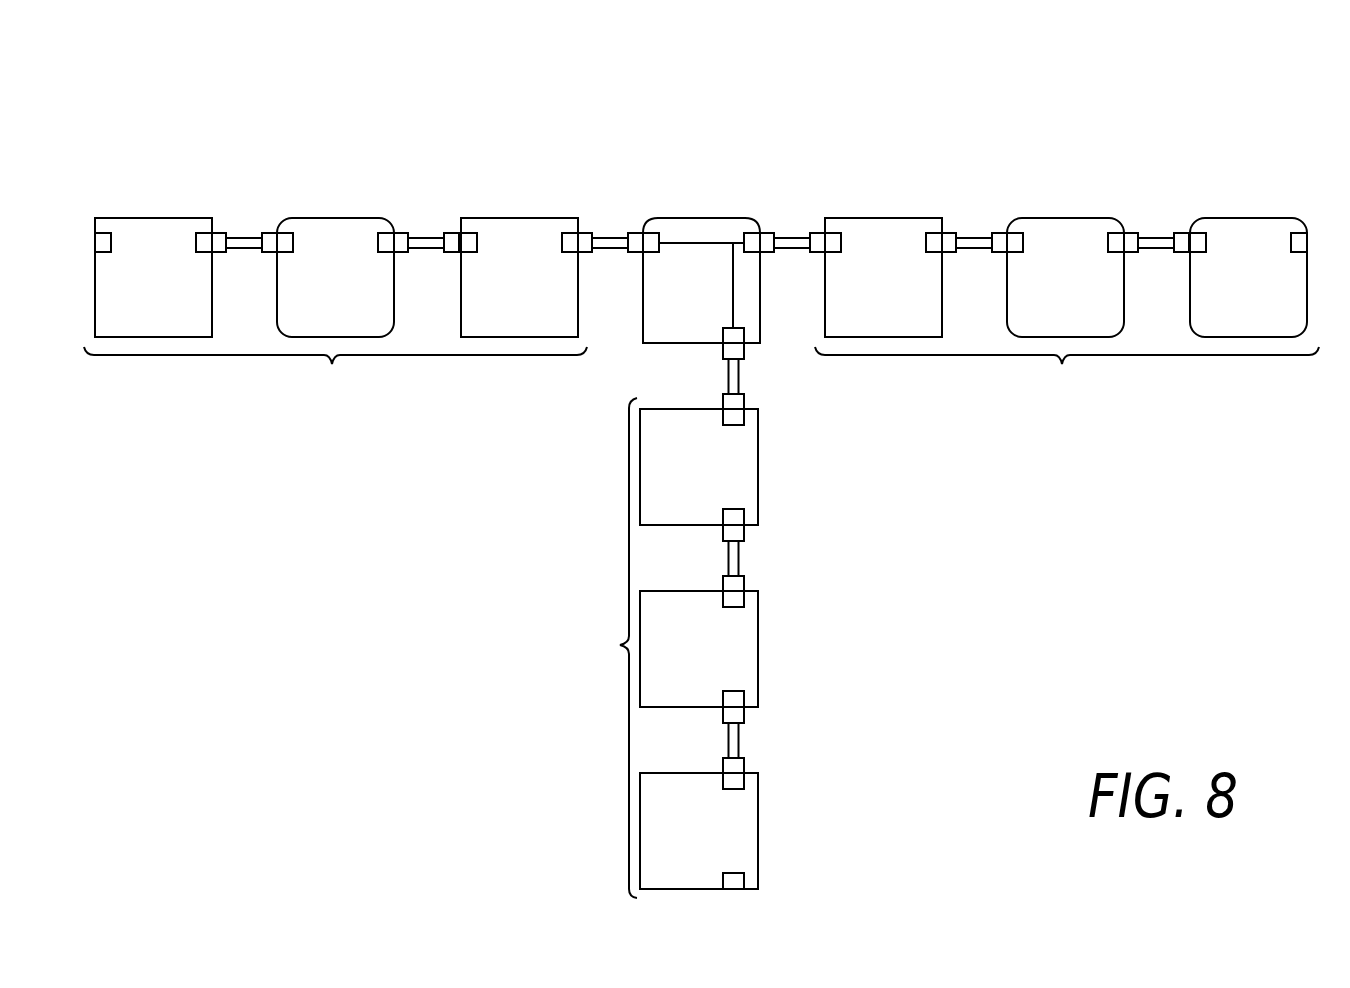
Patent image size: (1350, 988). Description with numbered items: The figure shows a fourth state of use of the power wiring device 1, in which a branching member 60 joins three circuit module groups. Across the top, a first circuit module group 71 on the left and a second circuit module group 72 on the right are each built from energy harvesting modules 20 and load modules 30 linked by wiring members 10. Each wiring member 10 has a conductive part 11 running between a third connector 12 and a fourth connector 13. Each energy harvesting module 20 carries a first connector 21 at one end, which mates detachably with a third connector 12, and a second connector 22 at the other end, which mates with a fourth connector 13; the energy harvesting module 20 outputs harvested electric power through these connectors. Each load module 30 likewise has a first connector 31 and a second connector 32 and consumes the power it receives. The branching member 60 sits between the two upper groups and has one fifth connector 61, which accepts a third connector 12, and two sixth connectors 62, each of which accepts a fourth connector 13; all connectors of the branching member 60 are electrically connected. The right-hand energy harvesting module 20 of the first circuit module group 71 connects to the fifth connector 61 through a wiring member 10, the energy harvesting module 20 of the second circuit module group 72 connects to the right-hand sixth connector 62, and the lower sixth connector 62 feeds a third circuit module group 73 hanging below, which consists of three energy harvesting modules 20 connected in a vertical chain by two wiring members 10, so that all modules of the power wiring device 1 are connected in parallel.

The power wiring device 1 is at (1222, 133).
The wiring member 10 is at (702, 472).
The conductive part 11 is at (232, 248).
The third connector 12 is at (268, 252).
The fourth connector 13 is at (219, 252).
The energy harvesting module 20 is at (518, 521).
The first connector 21 is at (102, 252).
The second connector 22 is at (205, 252).
The load module 30 is at (792, 245).
The first connector 31 is at (283, 252).
The second connector 32 is at (387, 252).
The branching member 60 is at (702, 248).
The fifth connector 61 is at (648, 252).
The sixth connector 62 is at (757, 252).
The first circuit module group 71 is at (335, 371).
The second circuit module group 72 is at (1067, 371).
The third circuit module group 73 is at (610, 648).